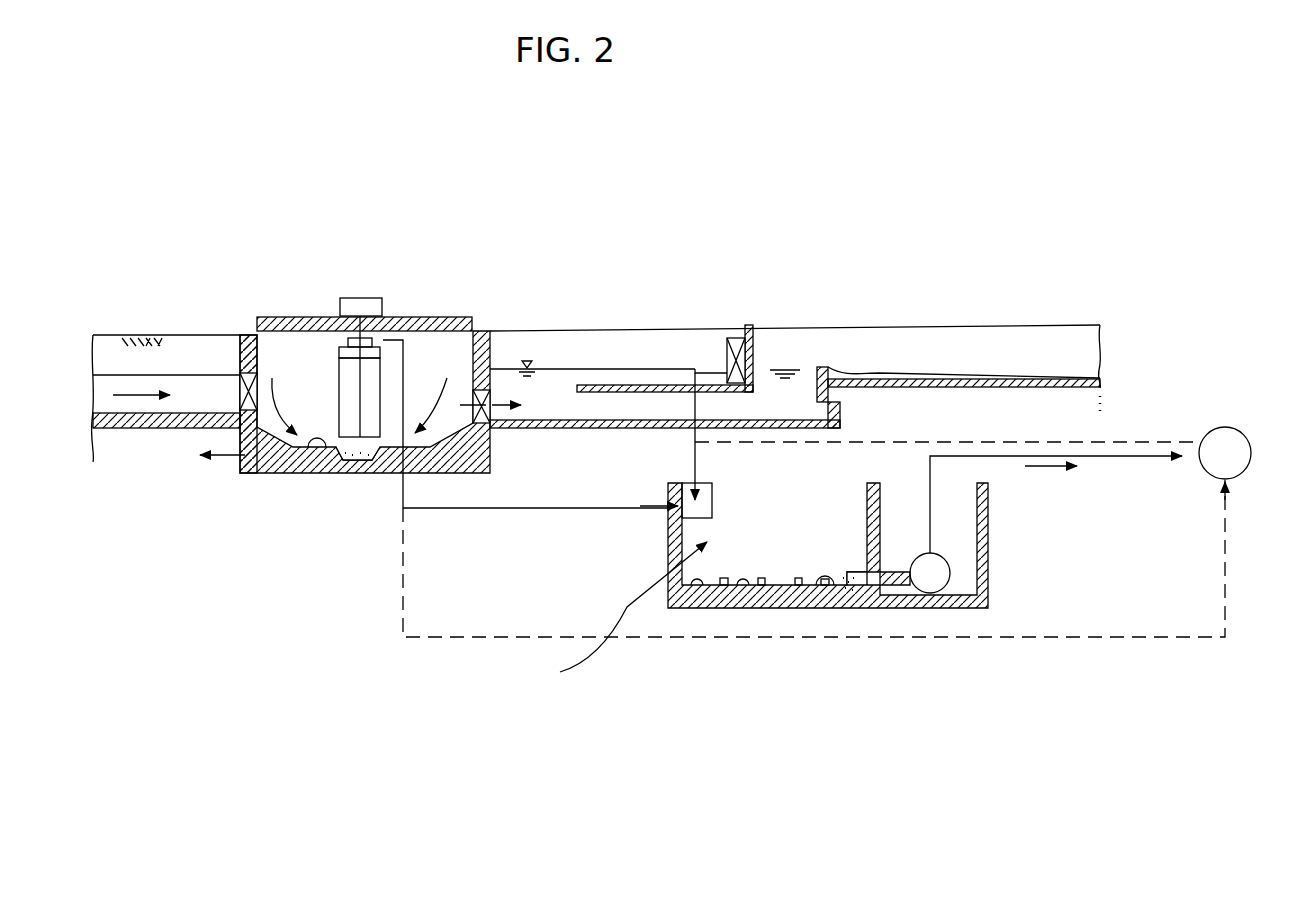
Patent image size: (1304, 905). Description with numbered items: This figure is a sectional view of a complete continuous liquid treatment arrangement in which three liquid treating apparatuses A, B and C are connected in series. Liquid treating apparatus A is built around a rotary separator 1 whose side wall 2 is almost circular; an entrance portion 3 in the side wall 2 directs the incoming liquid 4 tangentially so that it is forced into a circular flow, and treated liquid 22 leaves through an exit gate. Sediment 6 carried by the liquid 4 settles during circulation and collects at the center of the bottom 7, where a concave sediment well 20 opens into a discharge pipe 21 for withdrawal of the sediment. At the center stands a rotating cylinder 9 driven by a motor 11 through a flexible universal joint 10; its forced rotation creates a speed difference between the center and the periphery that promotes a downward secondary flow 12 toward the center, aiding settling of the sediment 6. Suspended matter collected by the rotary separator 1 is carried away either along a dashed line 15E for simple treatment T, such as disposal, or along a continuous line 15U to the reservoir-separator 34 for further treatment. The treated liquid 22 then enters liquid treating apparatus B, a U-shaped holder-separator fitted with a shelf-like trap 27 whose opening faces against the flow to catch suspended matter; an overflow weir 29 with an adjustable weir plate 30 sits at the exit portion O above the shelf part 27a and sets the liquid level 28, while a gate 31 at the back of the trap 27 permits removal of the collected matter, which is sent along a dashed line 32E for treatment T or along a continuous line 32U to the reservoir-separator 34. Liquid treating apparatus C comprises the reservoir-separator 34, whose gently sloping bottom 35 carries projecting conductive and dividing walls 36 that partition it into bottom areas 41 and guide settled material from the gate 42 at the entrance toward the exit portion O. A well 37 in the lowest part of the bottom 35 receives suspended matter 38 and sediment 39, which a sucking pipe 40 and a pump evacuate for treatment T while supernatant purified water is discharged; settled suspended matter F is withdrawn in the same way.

The rotary separator 1 is at (240, 357).
The side wall 2 is at (258, 338).
The entrance portion 3 is at (230, 392).
The liquid 4 is at (127, 397).
The sediment 6 is at (350, 470).
The bottom 7 is at (302, 477).
The rotating cylinder 9 is at (339, 378).
The flexible universal joint 10 is at (384, 317).
The motor 11 is at (362, 298).
The secondary flow 12 is at (456, 395).
The sediment well 20 is at (387, 472).
The discharge pipe 21 is at (225, 462).
The treated liquid 22 is at (498, 415).
The shelf-like trap 27 is at (708, 357).
The shelf part 27a is at (595, 380).
The liquid level 28 is at (652, 385).
The overflow weir 29 is at (838, 355).
The adjustable weir plate 30 is at (818, 367).
The gate 31 is at (737, 340).
The continuous line 32U is at (694, 460).
The dashed line 32E is at (1075, 440).
The continuous line 15U is at (461, 512).
The dashed line 15E is at (428, 640).
The reservoir-separator 34 is at (616, 621).
The bottom 35 is at (700, 610).
The conductive and dividing walls 36 is at (790, 580).
The well 37 is at (845, 610).
The suspended matter 38 is at (1048, 468).
The sediment 39 is at (810, 610).
The sucking pipe 40 is at (910, 610).
The bottom areas 41 is at (747, 610).
The gate 42 is at (715, 500).
The liquid treating apparatus A is at (215, 562).
The liquid treating apparatus B is at (770, 212).
The liquid treating apparatus C is at (843, 737).
The suspended matter F is at (572, 506).
The exit portion O is at (980, 350).
The treatment T is at (1237, 443).